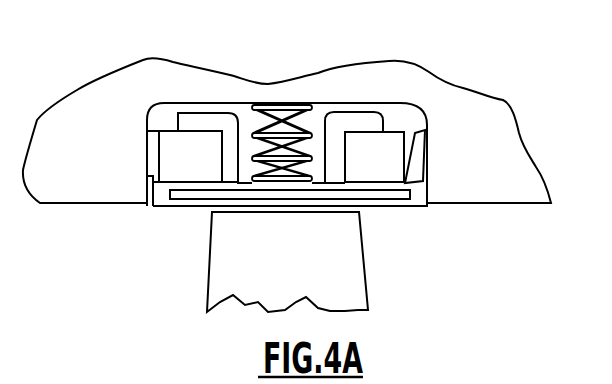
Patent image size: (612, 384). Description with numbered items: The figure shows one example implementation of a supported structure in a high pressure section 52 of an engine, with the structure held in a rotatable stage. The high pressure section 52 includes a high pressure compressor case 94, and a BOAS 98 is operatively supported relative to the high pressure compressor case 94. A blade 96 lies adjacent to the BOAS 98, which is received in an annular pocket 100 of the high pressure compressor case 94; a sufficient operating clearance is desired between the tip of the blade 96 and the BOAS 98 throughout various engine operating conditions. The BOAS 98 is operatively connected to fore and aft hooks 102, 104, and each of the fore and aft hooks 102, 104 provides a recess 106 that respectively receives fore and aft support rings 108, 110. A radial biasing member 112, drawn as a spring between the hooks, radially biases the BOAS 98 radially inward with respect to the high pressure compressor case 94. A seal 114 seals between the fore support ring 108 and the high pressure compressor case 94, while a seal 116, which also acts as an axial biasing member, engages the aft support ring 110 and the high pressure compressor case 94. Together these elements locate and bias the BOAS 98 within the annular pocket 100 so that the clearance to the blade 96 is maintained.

The high pressure section 52 is at (446, 43).
The high pressure compressor case 94 is at (532, 112).
The blade 96 is at (353, 258).
The BOAS 98 is at (157, 207).
The annular pocket 100 is at (413, 112).
The fore hook 102 is at (212, 122).
The aft hook 104 is at (357, 123).
The recess 106 is at (220, 153).
The fore support ring 108 is at (177, 150).
The aft support ring 110 is at (390, 140).
The radial biasing member 112 is at (273, 128).
The seal 114 is at (148, 160).
The seal 116 is at (418, 154).